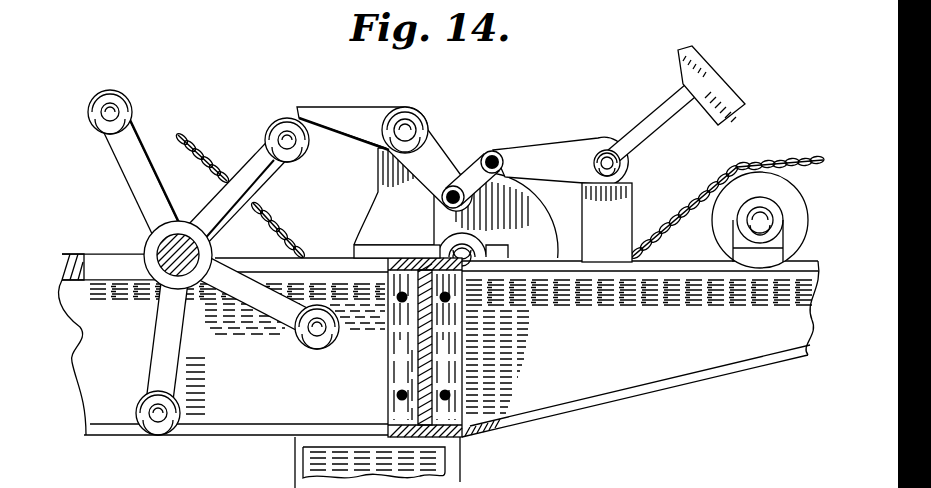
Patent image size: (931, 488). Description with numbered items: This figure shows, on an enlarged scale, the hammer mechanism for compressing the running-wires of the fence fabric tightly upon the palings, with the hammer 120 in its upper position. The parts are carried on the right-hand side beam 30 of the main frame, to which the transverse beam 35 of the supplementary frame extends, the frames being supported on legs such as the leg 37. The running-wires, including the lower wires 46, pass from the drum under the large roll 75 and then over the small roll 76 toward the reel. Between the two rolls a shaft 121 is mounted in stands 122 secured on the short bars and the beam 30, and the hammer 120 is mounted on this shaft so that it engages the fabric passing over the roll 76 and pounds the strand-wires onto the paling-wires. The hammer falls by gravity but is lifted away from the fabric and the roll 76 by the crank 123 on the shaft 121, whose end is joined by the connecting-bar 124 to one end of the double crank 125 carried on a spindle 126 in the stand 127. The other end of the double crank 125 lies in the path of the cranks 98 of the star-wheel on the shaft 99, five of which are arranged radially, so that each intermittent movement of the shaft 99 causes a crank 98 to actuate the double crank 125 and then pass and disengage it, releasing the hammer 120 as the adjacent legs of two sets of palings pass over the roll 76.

The right-hand side beam 30 is at (439, 347).
The transverse beam 35 is at (425, 347).
The leg 37 is at (456, 470).
The lower wires 46 is at (266, 211).
The large roll 75 is at (480, 250).
The small roll 76 is at (760, 220).
The crank 98 is at (142, 186).
The shaft 99 is at (179, 234).
The hammer 120 is at (702, 70).
The shaft 121 is at (605, 149).
The stand 122 is at (607, 222).
The crank 123 is at (560, 161).
The connecting-bar 124 is at (476, 156).
The double crank 125 is at (384, 159).
The spindle 126 is at (406, 114).
The stand 127 is at (397, 203).